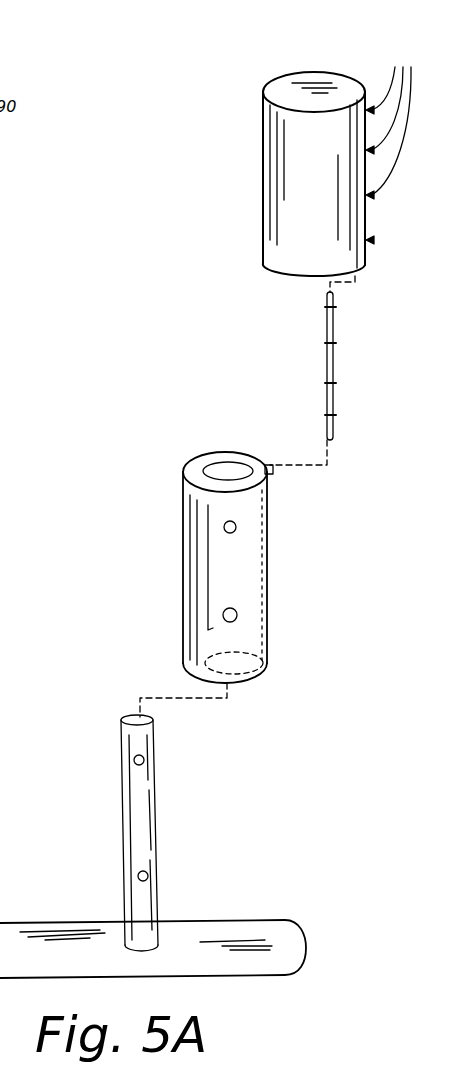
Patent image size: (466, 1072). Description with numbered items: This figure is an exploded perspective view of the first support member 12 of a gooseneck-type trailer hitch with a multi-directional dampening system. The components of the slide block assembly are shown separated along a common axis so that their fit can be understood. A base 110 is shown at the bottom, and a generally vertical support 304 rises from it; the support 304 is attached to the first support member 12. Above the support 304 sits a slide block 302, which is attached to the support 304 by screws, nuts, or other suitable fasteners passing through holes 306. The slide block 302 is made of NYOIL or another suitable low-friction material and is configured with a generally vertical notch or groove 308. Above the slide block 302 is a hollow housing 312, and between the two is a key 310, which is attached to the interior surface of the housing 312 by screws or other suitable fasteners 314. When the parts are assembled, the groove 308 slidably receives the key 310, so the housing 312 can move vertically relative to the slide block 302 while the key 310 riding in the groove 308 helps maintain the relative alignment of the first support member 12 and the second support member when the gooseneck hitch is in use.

The first support member 12 is at (181, 399).
The base 110 is at (72, 922).
The slide block 302 is at (188, 582).
The vertical support 304 is at (158, 845).
The holes 306 is at (247, 528).
The groove 308 is at (273, 468).
The key 310 is at (327, 325).
The hollow housing 312 is at (262, 192).
The fasteners 314 is at (392, 144).